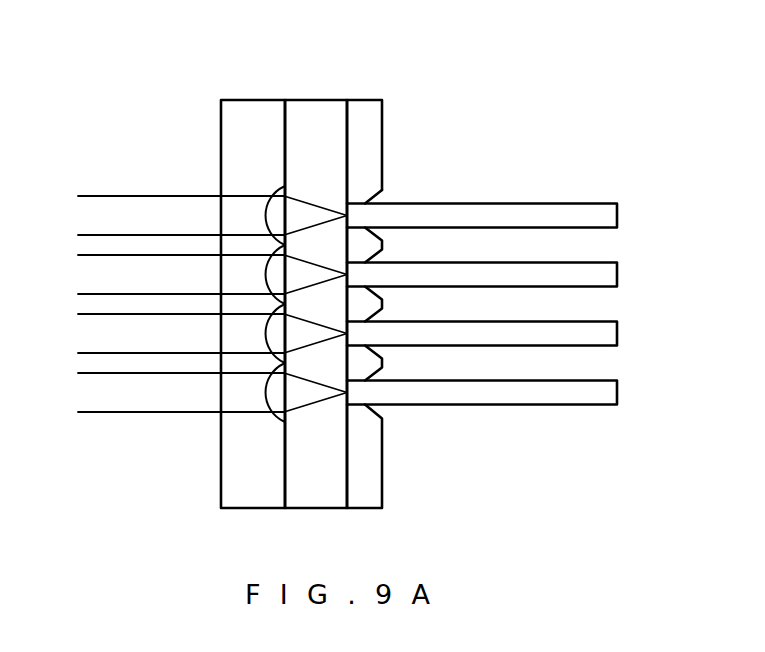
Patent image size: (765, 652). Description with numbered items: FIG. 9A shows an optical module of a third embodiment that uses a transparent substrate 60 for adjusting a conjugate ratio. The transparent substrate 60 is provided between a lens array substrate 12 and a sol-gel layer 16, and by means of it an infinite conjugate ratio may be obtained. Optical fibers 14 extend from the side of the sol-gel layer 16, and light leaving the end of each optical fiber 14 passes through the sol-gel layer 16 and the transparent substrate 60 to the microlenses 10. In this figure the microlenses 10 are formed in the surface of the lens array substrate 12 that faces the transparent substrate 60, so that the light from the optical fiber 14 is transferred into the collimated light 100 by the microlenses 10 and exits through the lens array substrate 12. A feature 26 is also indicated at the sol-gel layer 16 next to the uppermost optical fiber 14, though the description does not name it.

The collimated light 100 is at (97, 210).
The microlenses 10 is at (268, 218).
The lens array substrate 12 is at (250, 109).
The transparent substrate 60 is at (313, 109).
The sol-gel layer 16 is at (363, 109).
The chamfered portion 26 is at (384, 199).
The optical fiber 14 is at (540, 215).